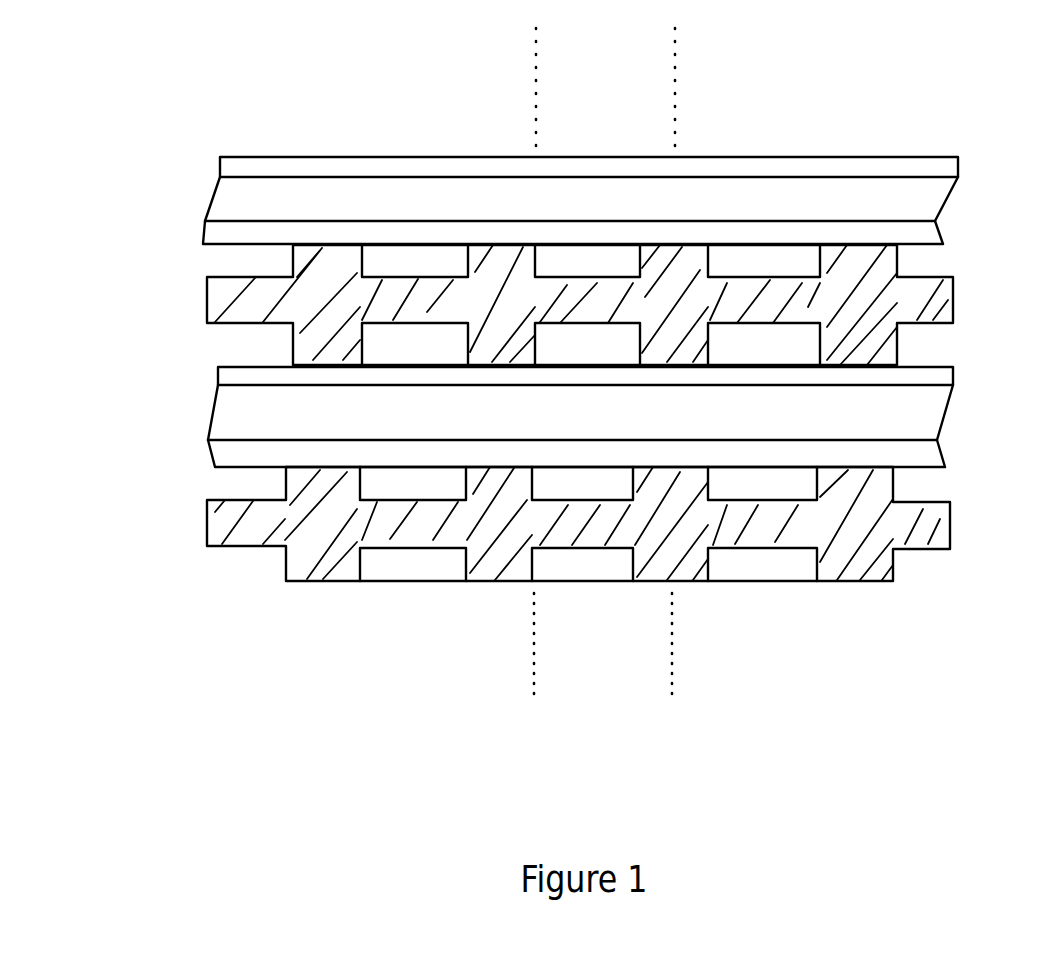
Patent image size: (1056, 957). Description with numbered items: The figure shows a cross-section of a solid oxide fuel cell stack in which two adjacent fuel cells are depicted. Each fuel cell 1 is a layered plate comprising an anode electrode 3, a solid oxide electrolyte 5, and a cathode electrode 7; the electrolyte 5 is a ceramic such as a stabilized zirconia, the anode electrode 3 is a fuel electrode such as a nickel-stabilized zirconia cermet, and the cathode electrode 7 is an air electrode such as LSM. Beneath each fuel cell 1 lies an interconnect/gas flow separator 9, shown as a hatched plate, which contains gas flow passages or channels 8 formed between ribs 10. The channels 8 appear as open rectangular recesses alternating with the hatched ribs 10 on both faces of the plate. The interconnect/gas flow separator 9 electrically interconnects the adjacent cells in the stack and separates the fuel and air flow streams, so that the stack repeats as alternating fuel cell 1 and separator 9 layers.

The fuel cell 1 is at (579, 313).
The anode electrode 3 is at (220, 160).
The solid oxide electrolyte 5 is at (206, 199).
The cathode electrode 7 is at (200, 243).
The gas flow passages or channels 8 is at (590, 415).
The interconnect/gas flow separator 9 is at (591, 427).
The ribs 10 is at (292, 272).